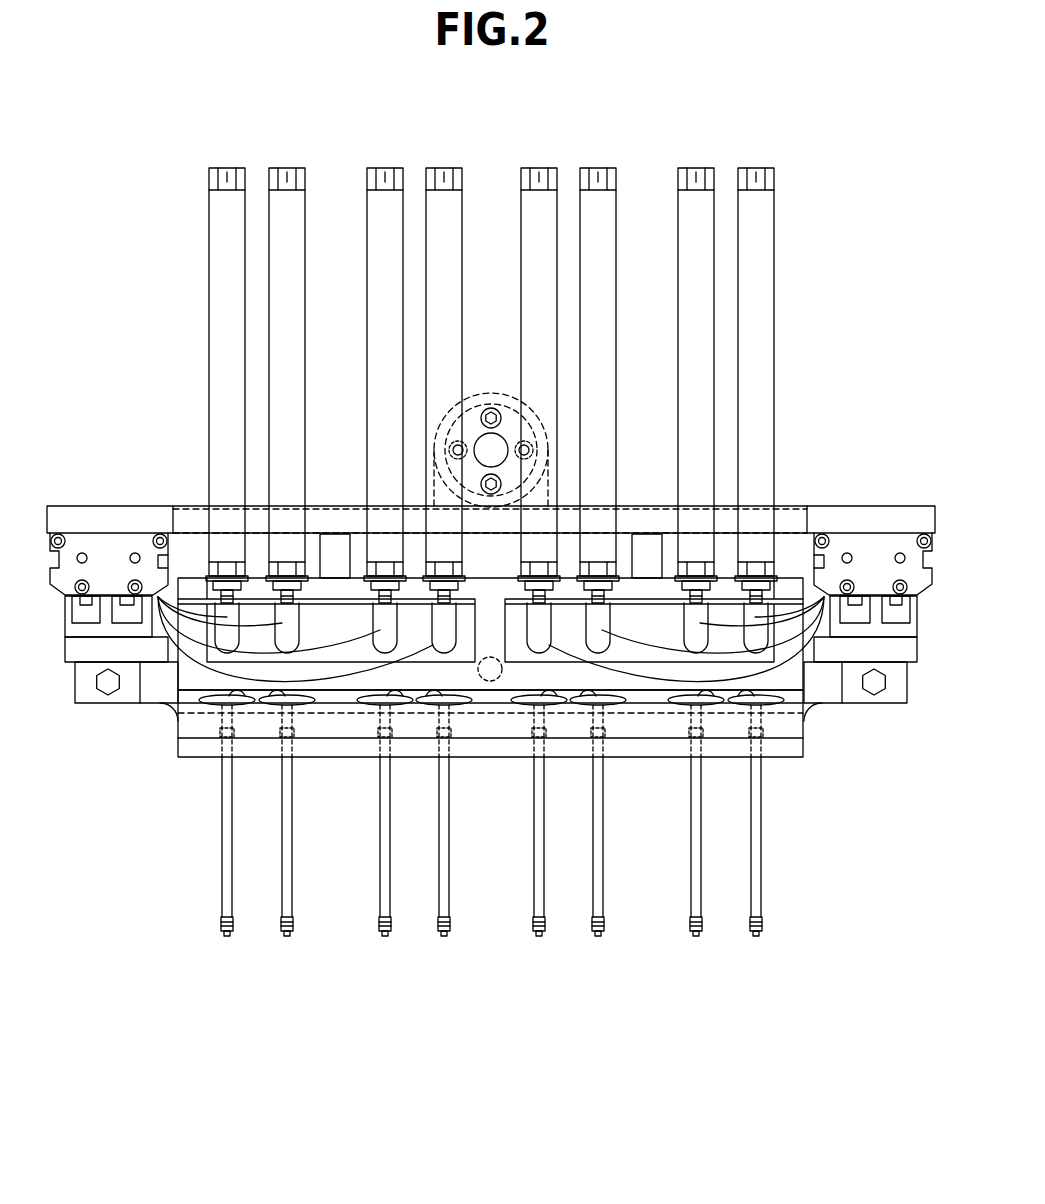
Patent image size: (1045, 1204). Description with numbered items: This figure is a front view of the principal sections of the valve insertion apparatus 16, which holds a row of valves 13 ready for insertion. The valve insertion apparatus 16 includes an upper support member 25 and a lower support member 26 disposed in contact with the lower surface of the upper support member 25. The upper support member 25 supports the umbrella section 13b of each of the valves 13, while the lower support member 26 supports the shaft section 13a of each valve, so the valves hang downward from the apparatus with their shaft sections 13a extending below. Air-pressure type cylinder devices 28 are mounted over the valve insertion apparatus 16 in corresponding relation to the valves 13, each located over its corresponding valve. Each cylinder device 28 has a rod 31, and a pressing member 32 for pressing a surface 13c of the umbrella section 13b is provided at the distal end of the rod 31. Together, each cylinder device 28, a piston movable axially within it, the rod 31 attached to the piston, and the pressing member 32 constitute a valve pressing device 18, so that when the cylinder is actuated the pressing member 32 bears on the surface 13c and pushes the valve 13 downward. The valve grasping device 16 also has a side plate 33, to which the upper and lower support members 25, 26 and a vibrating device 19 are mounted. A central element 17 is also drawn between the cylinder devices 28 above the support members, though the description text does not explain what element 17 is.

The valve 13 is at (287, 934).
The shaft section 13a is at (222, 857).
The umbrella section 13b is at (212, 702).
The surface of the umbrella section 13c is at (276, 700).
The valve insertion apparatus 16 is at (175, 727).
The central coupling 17 is at (488, 405).
The valve pressing device 18 is at (210, 272).
The vibrating device 19 is at (491, 657).
The upper support member 25 is at (795, 727).
The lower support member 26 is at (798, 750).
The cylinder device 28 is at (286, 170).
The rod 31 is at (210, 590).
The pressing member 32 is at (158, 597).
The side plate 33 is at (792, 678).